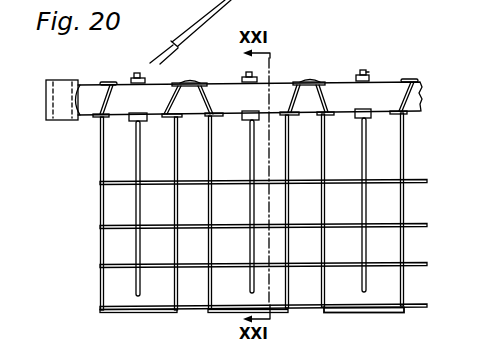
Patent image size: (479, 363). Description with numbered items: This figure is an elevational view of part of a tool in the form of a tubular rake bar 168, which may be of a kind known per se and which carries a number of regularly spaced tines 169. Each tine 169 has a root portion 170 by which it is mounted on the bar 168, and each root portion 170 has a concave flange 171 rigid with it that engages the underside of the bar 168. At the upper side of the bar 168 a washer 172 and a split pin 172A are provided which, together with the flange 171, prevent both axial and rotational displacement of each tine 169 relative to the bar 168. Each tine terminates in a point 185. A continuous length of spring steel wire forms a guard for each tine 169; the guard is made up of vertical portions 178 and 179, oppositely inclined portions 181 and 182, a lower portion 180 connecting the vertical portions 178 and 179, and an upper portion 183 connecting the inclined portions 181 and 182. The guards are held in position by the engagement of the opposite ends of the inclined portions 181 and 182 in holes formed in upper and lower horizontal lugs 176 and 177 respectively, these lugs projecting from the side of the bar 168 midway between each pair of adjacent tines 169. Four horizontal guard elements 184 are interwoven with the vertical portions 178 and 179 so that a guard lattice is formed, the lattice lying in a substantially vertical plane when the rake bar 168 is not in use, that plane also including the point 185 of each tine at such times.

The tubular rake bar 168 is at (354, 78).
The tine 169 is at (246, 208).
The root portion 170 is at (368, 74).
The concave flange 171 is at (369, 120).
The washer 172 is at (365, 70).
The split pin 172A is at (372, 72).
The upper horizontal lug 176 is at (203, 98).
The lower horizontal lug 177 is at (213, 117).
The vertical portion 178 is at (102, 218).
The vertical portion 179 is at (402, 160).
The lower portion 180 is at (382, 312).
The inclined portion 181 is at (325, 97).
The inclined portion 182 is at (405, 99).
The upper portion 183 is at (319, 86).
The horizontal guard element 184 is at (413, 225).
The point 185 is at (137, 295).